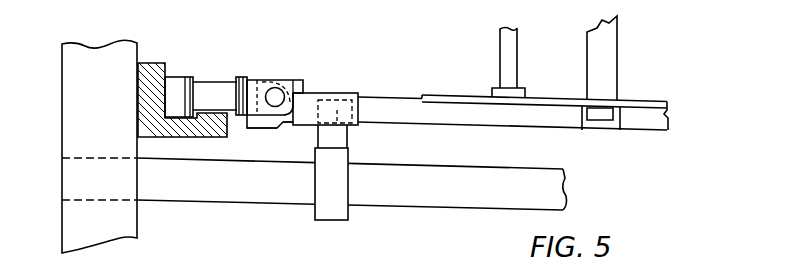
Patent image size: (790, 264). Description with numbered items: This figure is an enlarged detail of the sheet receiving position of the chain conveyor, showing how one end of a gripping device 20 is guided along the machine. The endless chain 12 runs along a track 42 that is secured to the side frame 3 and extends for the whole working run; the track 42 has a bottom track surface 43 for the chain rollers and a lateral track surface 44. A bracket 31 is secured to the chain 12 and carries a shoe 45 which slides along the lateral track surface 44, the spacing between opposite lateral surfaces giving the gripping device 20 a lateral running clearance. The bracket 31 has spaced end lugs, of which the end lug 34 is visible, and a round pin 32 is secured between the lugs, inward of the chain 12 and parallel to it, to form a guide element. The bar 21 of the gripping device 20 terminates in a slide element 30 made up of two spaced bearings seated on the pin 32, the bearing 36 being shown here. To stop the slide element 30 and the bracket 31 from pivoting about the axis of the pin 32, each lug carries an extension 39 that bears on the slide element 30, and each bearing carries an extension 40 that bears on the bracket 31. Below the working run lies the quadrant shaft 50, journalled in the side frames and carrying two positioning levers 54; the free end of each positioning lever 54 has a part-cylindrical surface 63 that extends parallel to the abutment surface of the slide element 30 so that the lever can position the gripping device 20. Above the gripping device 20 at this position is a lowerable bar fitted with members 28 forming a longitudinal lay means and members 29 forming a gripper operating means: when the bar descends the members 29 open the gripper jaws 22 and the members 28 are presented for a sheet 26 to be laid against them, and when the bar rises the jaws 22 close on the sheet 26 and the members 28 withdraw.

The side frame 3 is at (118, 52).
The track 42 is at (158, 62).
The lateral track surface 44 is at (168, 92).
The shoe 45 is at (174, 103).
The bottom track surface 43 is at (210, 105).
The endless chain 12 is at (238, 79).
The bracket 31 is at (260, 78).
The round pin 32 is at (277, 90).
The extension 39 is at (307, 91).
The end lug 34 is at (273, 117).
The bearing 36 is at (285, 121).
The extension 40 is at (250, 127).
The slide element 30 is at (337, 93).
The part-cylindrical surface 63 is at (338, 128).
The positioning lever 54 is at (336, 219).
The quadrant shaft 50 is at (438, 167).
The gripping device 20 is at (393, 95).
The bar 21 is at (413, 97).
The sheet 26 is at (458, 95).
The gripper operating member 29 is at (517, 53).
The gripper jaws 22 is at (525, 87).
The longitudinal lay member 28 is at (617, 70).